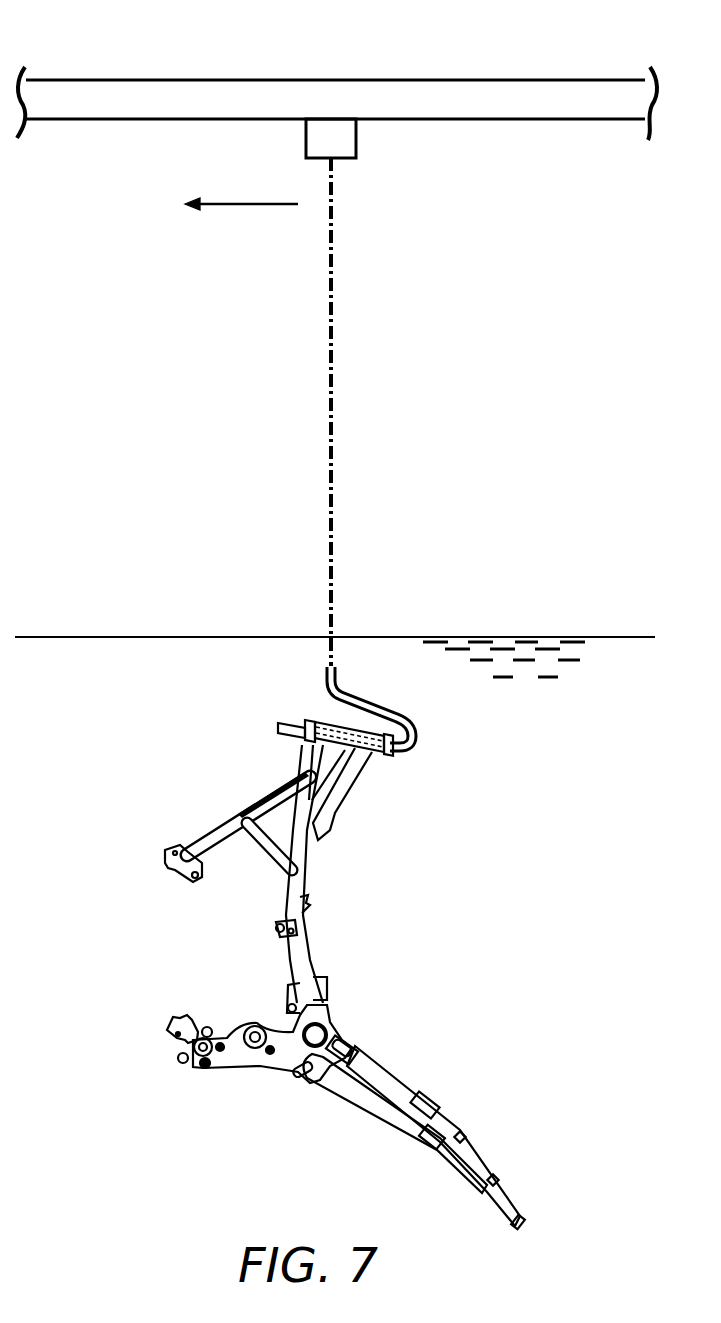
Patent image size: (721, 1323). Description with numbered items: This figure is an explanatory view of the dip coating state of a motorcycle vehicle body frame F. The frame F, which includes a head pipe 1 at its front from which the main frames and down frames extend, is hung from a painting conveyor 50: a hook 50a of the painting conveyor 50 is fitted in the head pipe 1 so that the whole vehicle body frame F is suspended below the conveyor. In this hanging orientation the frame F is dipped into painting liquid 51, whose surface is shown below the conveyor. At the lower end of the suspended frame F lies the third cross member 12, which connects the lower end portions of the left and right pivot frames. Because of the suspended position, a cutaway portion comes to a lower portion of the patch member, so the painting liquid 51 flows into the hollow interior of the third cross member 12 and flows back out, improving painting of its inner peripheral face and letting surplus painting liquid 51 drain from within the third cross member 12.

The painting conveyor 50 is at (428, 96).
The hook 50a is at (418, 735).
The painting liquid 51 is at (503, 655).
The vehicle body frame F is at (332, 870).
The head pipe 1 is at (333, 724).
The third cross member 12 is at (190, 1063).